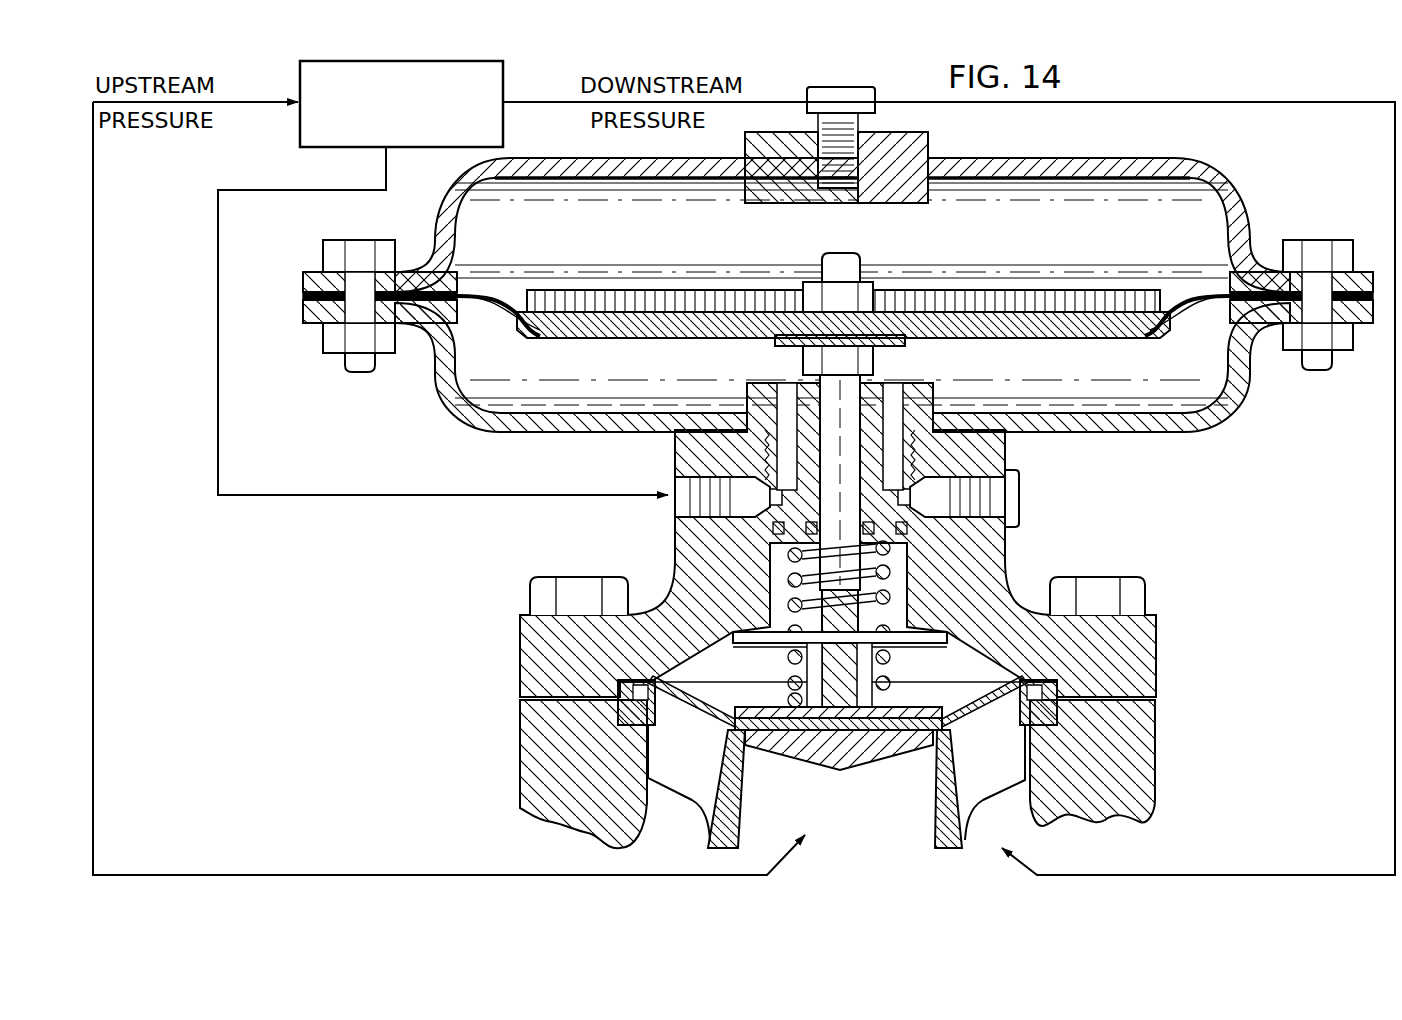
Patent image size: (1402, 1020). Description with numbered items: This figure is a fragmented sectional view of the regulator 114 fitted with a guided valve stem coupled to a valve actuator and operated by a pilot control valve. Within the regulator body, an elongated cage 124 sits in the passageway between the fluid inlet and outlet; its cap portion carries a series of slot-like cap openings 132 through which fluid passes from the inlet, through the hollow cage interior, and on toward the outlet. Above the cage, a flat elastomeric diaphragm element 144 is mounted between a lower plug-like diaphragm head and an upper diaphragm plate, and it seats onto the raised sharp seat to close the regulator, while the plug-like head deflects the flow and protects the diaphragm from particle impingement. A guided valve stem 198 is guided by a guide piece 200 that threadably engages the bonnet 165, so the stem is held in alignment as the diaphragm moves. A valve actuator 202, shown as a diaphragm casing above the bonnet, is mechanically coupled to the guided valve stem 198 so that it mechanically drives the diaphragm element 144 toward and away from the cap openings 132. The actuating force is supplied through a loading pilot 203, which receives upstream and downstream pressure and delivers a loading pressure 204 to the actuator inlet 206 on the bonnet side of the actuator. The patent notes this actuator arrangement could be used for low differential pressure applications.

The regulator 114 is at (495, 698).
The elongated cage 124 is at (740, 790).
The cap openings 132 is at (684, 770).
The elastomeric diaphragm element 144 is at (730, 690).
The bonnet 165 is at (1010, 452).
The guided valve stem 198 is at (815, 388).
The guide piece 200 is at (930, 378).
The valve actuator 202 is at (1098, 146).
The loading pilot 203 is at (300, 140).
The loading pressure 204 is at (262, 190).
The actuator inlet 206 is at (678, 480).